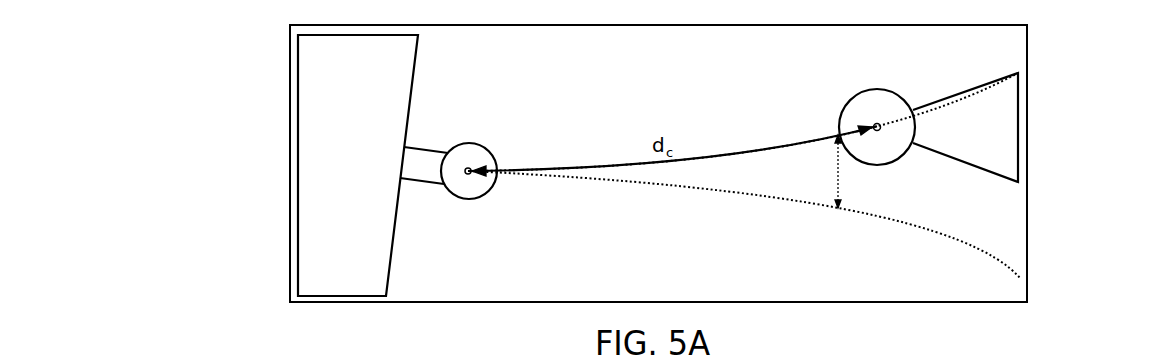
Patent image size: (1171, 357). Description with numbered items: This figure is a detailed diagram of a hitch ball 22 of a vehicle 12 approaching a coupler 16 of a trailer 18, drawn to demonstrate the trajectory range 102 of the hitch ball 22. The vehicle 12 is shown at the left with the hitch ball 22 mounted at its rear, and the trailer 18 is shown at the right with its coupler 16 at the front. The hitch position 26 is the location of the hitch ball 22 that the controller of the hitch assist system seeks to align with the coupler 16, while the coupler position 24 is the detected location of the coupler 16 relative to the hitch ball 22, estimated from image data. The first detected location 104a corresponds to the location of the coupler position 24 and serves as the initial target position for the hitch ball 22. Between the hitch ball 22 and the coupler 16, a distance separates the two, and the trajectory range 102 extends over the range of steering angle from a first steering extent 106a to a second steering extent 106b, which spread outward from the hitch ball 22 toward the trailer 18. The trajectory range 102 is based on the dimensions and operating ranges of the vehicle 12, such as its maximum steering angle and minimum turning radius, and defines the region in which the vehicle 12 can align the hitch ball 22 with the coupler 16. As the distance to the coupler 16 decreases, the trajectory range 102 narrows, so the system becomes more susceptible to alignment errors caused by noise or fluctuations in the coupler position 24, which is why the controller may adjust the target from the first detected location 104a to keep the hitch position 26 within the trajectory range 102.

The vehicle 12 is at (323, 62).
The hitch ball 22 is at (467, 148).
The hitch position 26 is at (468, 170).
The coupler 16 is at (868, 95).
The coupler position 24 is at (796, 116).
The first detected location 104a is at (875, 126).
The trailer 18 is at (1010, 128).
The trajectory range 102 is at (848, 196).
The first steering extent 106a is at (717, 155).
The second steering extent 106b is at (735, 193).